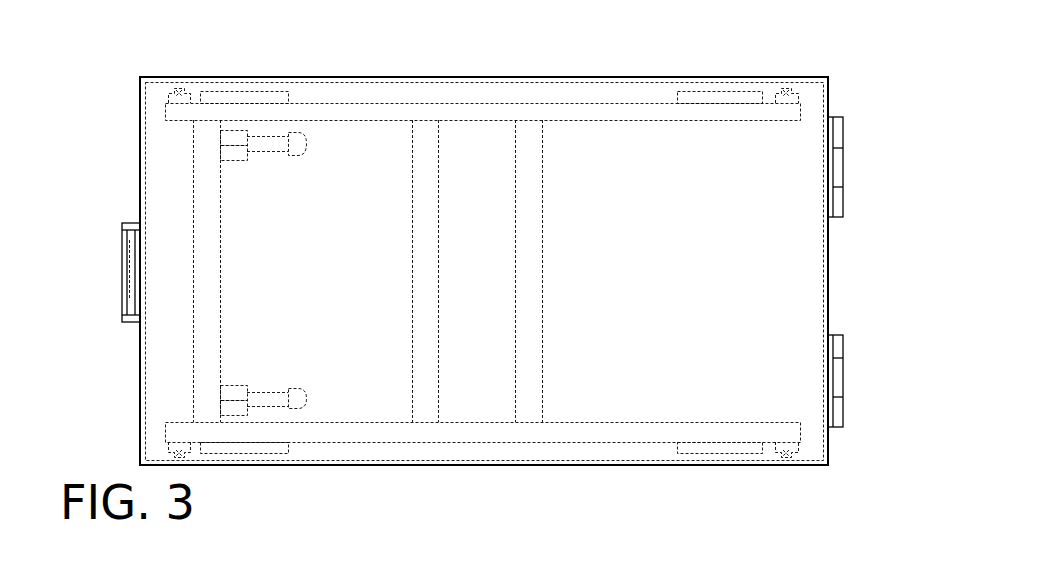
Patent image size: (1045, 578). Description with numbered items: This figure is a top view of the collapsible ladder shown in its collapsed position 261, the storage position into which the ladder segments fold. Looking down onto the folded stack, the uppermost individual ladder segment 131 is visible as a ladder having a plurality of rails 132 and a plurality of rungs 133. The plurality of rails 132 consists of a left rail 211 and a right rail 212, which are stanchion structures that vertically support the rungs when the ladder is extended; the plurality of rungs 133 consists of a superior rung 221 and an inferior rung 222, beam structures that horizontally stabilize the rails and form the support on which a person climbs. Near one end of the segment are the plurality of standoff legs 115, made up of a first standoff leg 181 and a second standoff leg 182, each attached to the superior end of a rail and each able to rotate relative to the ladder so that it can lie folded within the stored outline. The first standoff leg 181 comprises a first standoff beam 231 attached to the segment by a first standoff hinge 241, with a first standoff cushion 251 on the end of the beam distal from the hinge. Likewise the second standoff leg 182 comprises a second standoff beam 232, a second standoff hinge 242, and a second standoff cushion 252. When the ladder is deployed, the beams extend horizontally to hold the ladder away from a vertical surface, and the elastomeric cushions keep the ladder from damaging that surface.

The collapsed position 261 is at (119, 105).
The individual ladder segment 131 is at (815, 108).
The plurality of rails 132 is at (612, 120).
The plurality of rungs 133 is at (517, 358).
The plurality of standoff legs 115 is at (262, 383).
The left rail 211 is at (660, 120).
The right rail 212 is at (669, 423).
The superior rung 221 is at (427, 208).
The inferior rung 222 is at (530, 240).
The first standoff beam 231 is at (278, 152).
The second standoff beam 232 is at (275, 390).
The first standoff hinge 241 is at (230, 163).
The second standoff hinge 242 is at (238, 385).
The first standoff cushion 251 is at (302, 135).
The second standoff cushion 252 is at (297, 410).
The first standoff leg 181 is at (314, 150).
The second standoff leg 182 is at (312, 397).